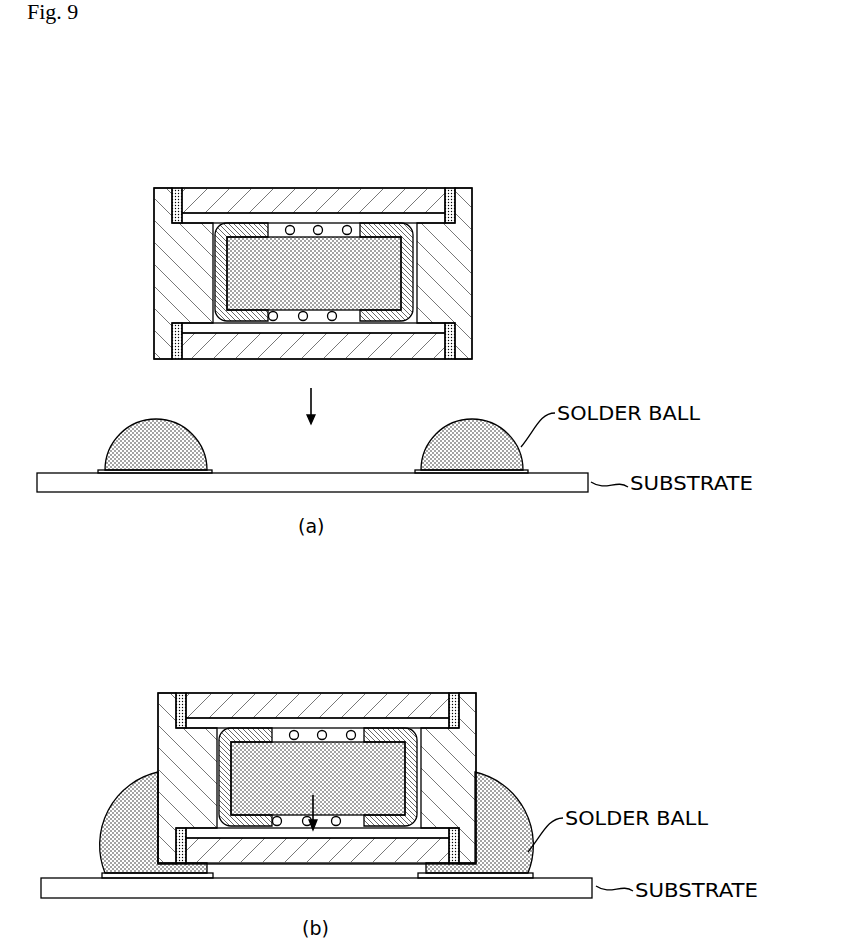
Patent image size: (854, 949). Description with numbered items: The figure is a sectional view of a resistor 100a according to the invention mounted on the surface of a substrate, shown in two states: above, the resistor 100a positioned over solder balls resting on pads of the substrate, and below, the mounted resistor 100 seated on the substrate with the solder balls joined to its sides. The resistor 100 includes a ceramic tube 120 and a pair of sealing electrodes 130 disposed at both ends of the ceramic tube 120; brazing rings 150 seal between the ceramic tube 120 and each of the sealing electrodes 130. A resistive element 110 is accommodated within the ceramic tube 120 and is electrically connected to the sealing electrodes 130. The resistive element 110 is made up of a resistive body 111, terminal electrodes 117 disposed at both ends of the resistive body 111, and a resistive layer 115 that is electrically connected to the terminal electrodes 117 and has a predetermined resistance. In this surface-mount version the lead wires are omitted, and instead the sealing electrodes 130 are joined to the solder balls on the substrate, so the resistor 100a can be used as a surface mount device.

The resistor 100a is at (213, 68).
The resistor 100 is at (203, 572).
The resistive element 110 is at (316, 464).
The resistive body 111 is at (268, 223).
The resistive layer 115 is at (317, 235).
The terminal electrodes 117 is at (367, 223).
The ceramic tube 120 is at (200, 187).
The sealing electrodes 130 is at (465, 237).
The brazing rings 150 is at (450, 187).